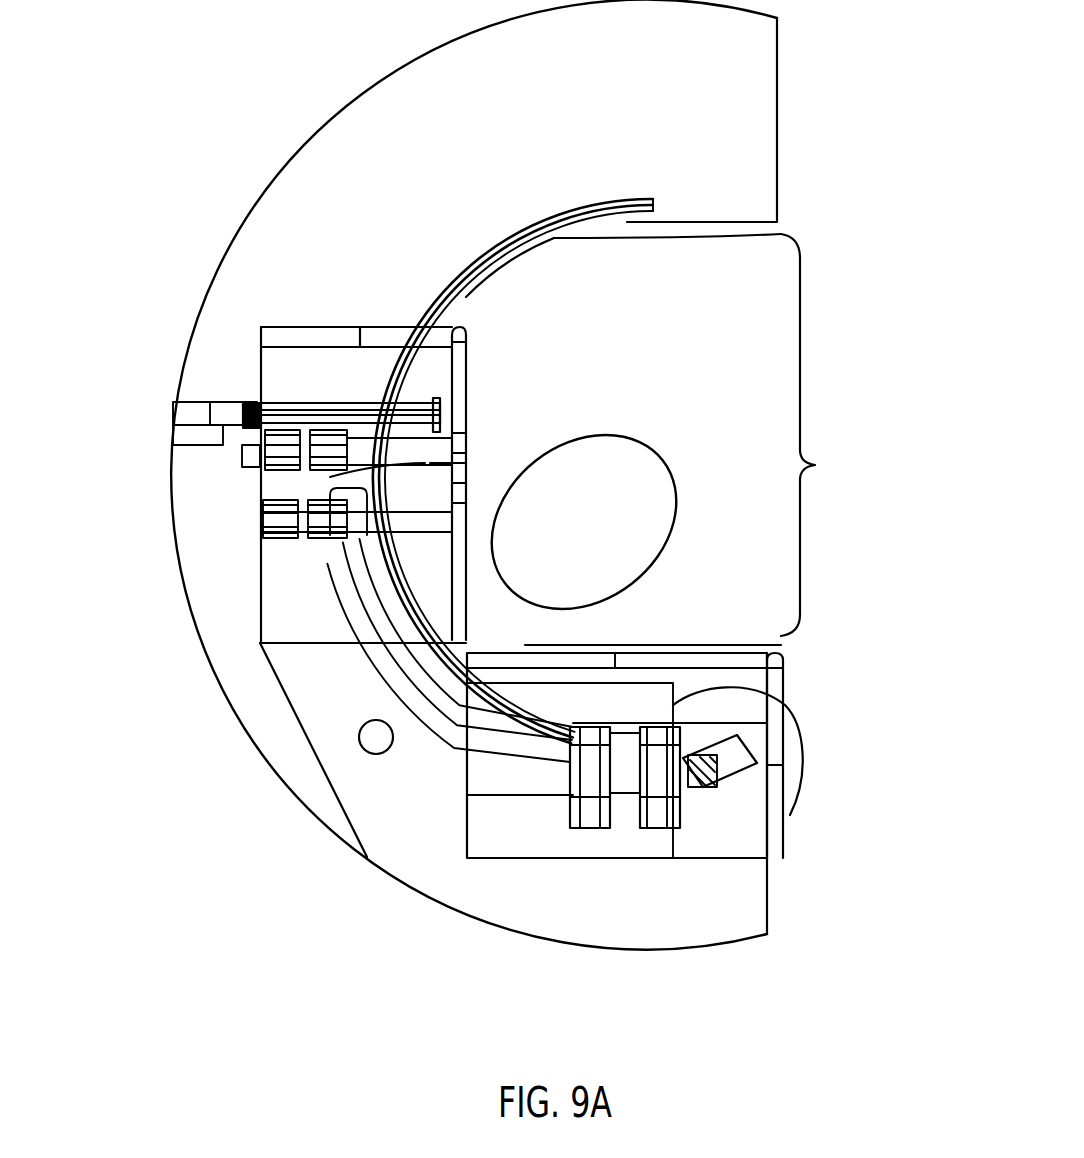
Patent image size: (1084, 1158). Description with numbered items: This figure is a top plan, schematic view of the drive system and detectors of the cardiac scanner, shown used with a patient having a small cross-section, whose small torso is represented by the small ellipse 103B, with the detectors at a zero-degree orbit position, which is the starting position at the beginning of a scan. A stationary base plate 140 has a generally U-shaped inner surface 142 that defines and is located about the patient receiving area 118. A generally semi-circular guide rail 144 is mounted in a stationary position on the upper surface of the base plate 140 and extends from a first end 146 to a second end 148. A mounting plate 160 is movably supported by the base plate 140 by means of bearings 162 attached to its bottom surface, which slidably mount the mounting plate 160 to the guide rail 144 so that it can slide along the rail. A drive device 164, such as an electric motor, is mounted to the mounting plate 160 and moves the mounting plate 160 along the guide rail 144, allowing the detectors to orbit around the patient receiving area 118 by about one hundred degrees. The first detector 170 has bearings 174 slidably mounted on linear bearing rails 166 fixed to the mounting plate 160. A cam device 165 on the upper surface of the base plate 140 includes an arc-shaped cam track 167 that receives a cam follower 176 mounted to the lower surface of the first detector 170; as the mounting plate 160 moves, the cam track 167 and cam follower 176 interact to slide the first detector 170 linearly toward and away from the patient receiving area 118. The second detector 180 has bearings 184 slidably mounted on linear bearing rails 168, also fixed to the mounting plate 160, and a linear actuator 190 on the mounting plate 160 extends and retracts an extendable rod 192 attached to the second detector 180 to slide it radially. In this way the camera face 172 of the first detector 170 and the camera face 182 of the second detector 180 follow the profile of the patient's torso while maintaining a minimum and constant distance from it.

The small ellipse 103B is at (613, 537).
The patient receiving area 118 is at (672, 439).
The base plate 140 is at (640, 120).
The inner surface 142 is at (786, 236).
The guide rail 144 is at (583, 200).
The first end 146 is at (760, 684).
The second end 148 is at (655, 205).
The mounting plate 160 is at (260, 644).
The bearings 162 is at (465, 665).
The drive device 164 is at (360, 743).
The cam device 165 is at (848, 793).
The linear bearing rails 166 is at (653, 830).
The cam track 167 is at (430, 715).
The linear bearing rails 168 is at (430, 507).
The first detector 170 is at (467, 848).
The camera face 172 is at (680, 653).
The bearings 174 is at (660, 727).
The cam follower 176 is at (788, 814).
The second detector 180 is at (343, 327).
The camera face 182 is at (467, 357).
The bearings 184 is at (262, 462).
The linear actuator 190 is at (313, 400).
The extendable rod 192 is at (437, 398).